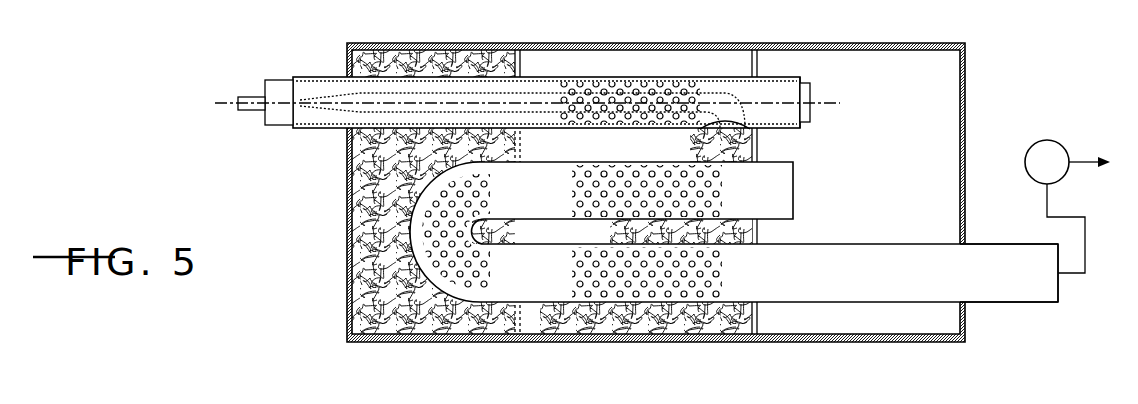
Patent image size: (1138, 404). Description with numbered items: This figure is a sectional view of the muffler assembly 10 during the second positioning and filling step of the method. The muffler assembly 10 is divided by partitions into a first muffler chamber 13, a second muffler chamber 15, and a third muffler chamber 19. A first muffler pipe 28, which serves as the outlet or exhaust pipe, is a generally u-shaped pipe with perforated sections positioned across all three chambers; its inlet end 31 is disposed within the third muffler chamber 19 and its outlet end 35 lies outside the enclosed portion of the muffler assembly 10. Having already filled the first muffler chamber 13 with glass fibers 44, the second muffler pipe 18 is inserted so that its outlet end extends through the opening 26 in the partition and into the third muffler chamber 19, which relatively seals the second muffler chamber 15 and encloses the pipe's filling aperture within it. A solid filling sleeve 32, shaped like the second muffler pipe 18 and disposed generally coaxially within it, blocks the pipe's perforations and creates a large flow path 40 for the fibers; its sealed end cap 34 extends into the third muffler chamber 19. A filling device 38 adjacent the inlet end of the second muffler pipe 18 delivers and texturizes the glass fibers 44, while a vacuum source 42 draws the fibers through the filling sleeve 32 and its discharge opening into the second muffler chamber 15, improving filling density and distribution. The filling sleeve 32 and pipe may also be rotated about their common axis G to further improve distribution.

The muffler assembly 10 is at (876, 6).
The first muffler chamber 13 is at (445, 45).
The second muffler chamber 15 is at (620, 60).
The second muffler pipe 18 is at (316, 70).
The third muffler chamber 19 is at (951, 90).
The opening 26 is at (760, 58).
The first muffler pipe 28 is at (824, 308).
The inlet end 31 is at (800, 78).
The filling sleeve 32 is at (273, 80).
The end cap 34 is at (812, 97).
The outlet end 35 is at (1018, 303).
The filling device 38 is at (252, 112).
The flow path 40 is at (516, 90).
The vacuum source 42 is at (1047, 140).
The glass fibers 44 is at (400, 306).
The common axis G is at (222, 100).